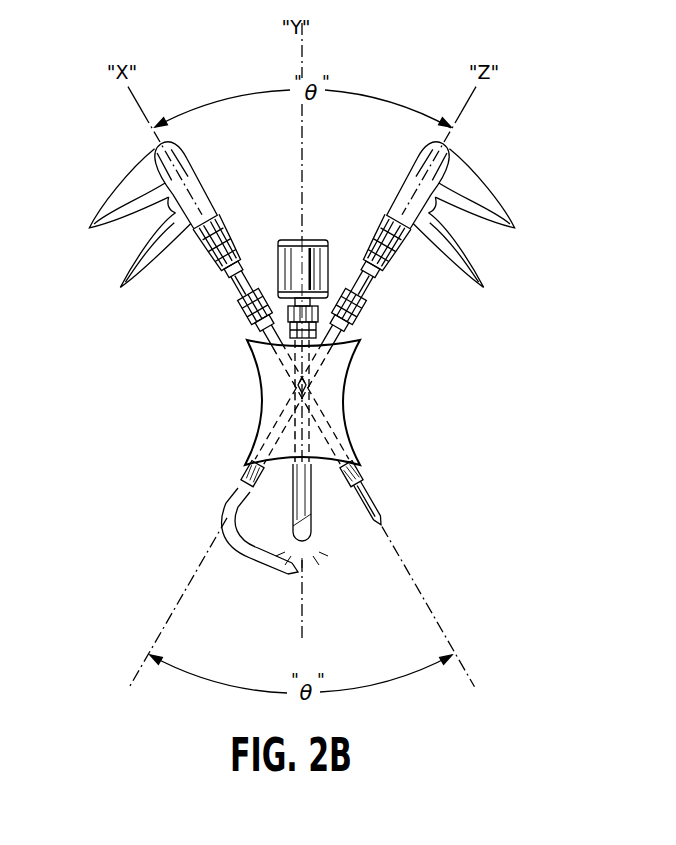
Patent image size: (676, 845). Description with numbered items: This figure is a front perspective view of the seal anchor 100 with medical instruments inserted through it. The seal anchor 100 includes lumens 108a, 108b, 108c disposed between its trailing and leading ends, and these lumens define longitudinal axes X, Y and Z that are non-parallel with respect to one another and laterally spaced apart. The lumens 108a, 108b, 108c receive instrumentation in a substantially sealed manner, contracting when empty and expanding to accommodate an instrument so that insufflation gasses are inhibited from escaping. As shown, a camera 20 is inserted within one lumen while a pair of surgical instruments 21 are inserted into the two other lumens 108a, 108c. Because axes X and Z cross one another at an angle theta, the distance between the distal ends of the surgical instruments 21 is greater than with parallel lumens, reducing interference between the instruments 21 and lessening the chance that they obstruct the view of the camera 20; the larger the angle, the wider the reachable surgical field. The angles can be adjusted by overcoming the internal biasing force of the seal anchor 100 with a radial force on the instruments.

The camera 20 is at (307, 250).
The surgical instruments 21 is at (188, 173).
The seal anchor 100 is at (355, 384).
The lumen 108a is at (268, 346).
The lumen 108b is at (316, 351).
The lumen 108c is at (278, 410).